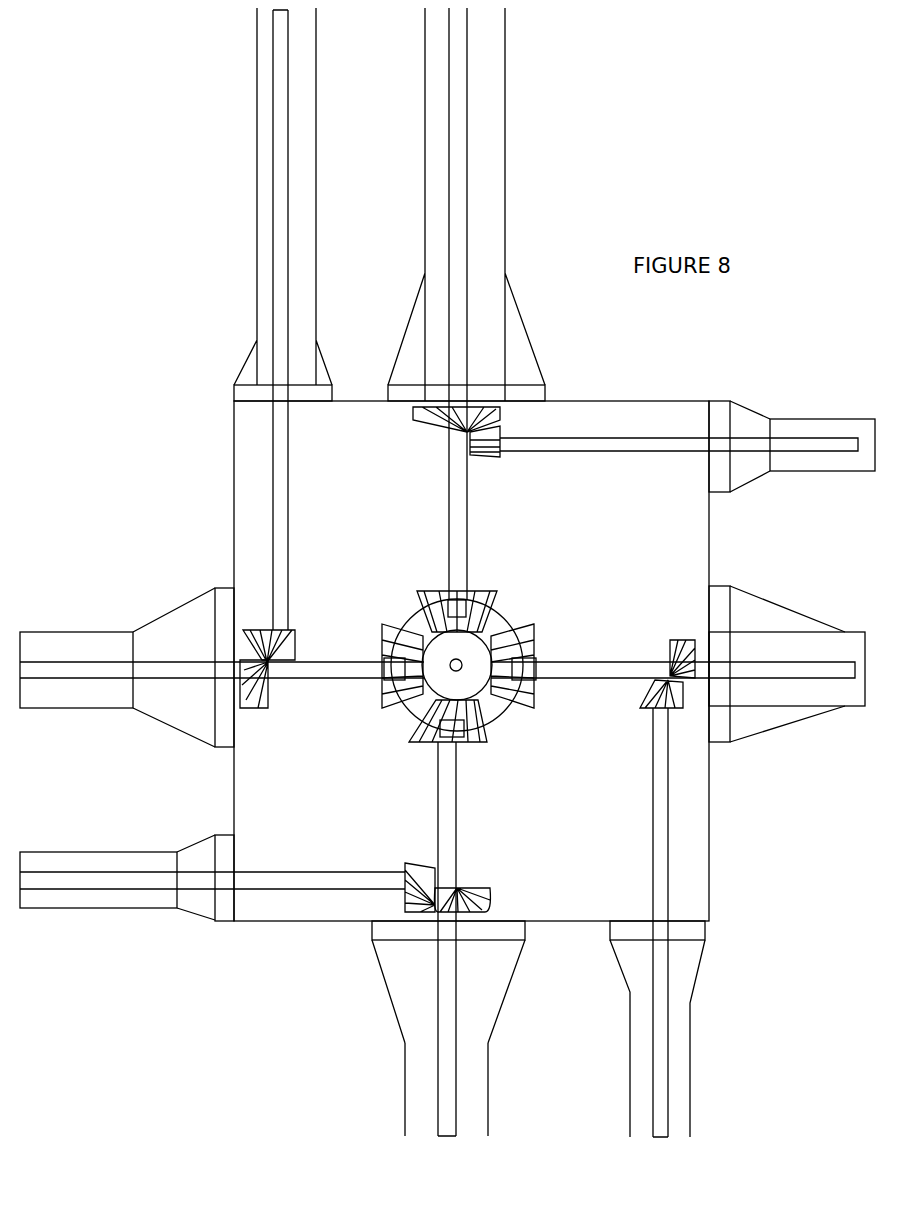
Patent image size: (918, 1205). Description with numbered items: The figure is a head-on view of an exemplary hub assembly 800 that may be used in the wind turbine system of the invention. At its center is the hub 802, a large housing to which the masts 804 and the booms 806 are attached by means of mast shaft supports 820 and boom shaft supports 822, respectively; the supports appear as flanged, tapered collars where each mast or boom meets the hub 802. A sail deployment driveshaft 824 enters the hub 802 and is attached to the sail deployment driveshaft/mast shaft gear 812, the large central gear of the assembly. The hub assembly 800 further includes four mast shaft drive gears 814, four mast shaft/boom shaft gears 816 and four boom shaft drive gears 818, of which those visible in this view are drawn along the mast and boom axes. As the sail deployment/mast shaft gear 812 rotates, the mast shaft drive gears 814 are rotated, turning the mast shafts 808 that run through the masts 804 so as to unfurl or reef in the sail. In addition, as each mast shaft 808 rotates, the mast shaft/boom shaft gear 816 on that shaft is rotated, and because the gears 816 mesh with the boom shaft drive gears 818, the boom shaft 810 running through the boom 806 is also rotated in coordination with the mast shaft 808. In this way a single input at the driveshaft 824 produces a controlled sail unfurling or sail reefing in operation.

The hub assembly 800 is at (147, 92).
The hub 802 is at (310, 957).
The mast 804 is at (404, 1070).
The boom 806 is at (85, 860).
The mast shaft 808 is at (443, 1070).
The boom shaft 810 is at (103, 885).
The sail deployment driveshaft/mast shaft gear 812 is at (510, 630).
The mast shaft drive gear 814 is at (412, 740).
The mast shaft/boom shaft gear 816 is at (492, 890).
The boom shaft drive gear 818 is at (415, 878).
The mast shaft support 820 is at (385, 945).
The boom shaft support 822 is at (202, 948).
The sail deployment driveshaft 824 is at (452, 660).